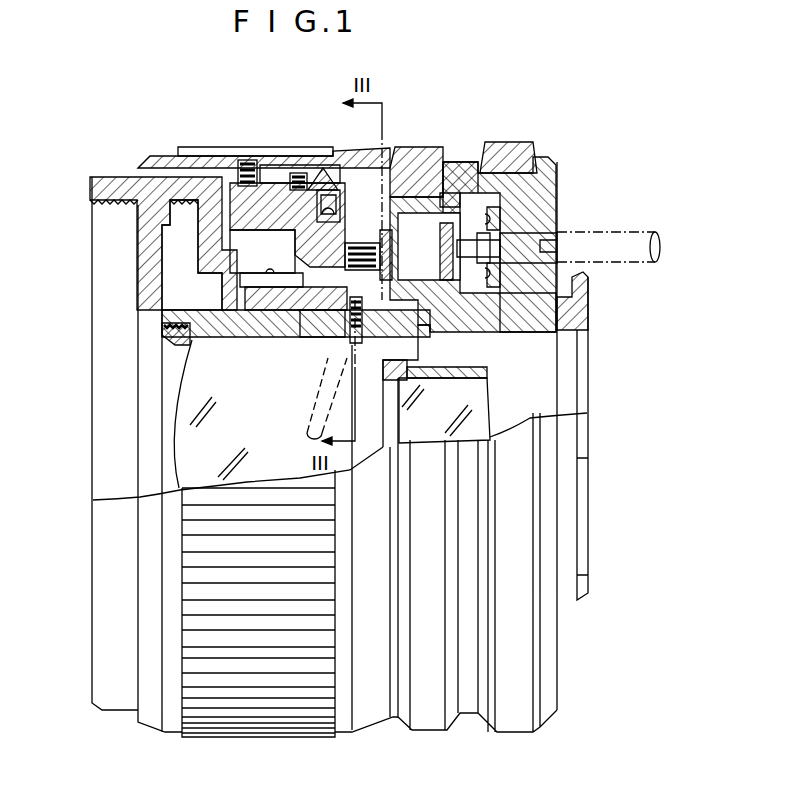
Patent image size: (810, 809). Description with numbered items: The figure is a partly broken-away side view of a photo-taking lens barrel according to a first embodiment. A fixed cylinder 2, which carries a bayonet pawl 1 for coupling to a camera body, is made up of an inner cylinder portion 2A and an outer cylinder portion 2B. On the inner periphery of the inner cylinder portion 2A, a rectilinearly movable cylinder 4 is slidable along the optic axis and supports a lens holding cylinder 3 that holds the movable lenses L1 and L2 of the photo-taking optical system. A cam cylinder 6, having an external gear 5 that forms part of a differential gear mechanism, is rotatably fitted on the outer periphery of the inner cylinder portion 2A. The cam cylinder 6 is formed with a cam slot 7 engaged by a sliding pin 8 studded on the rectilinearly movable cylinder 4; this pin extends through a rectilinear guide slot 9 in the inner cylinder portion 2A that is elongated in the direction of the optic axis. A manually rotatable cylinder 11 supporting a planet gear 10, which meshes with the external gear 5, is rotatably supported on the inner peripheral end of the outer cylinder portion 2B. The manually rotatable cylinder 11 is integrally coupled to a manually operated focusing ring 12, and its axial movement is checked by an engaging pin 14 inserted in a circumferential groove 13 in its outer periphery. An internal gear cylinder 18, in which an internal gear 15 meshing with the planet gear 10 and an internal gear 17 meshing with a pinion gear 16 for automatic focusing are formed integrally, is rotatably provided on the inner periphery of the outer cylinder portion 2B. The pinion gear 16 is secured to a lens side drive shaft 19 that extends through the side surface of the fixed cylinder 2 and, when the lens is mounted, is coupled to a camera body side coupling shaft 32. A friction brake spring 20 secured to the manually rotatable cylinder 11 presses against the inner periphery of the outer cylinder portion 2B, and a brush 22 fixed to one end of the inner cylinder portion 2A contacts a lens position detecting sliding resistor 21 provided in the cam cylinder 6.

The bayonet pawl 1 is at (590, 297).
The fixed cylinder 2 is at (555, 152).
The inner cylinder portion 2A is at (465, 318).
The outer cylinder portion 2B is at (410, 157).
The lens holding cylinder 3 is at (215, 350).
The rectilinearly movable cylinder 4 is at (108, 177).
The external gear 5 is at (400, 280).
The cam cylinder 6 is at (313, 320).
The cam slot 7 is at (305, 426).
The sliding pin 8 is at (367, 318).
The rectilinear guide slot 9 is at (327, 322).
The planet gear 10 is at (388, 240).
The manually rotatable cylinder 11 is at (235, 205).
The manually operated focusing ring 12 is at (165, 155).
The circumferential groove 13 is at (293, 213).
The engaging pin 14 is at (293, 213).
The internal gear 15 is at (425, 195).
The pinion gear 16 is at (506, 318).
The internal gear 17 is at (478, 215).
The internal gear cylinder 18 is at (453, 192).
The lens side drive shaft 19 is at (552, 227).
The friction brake spring 20 is at (340, 193).
The lens position detecting sliding resistor 21 is at (267, 310).
The brush 22 is at (227, 278).
The camera body side coupling shaft 32 is at (602, 237).
The movable lens L1 is at (180, 432).
The movable lens L2 is at (478, 413).